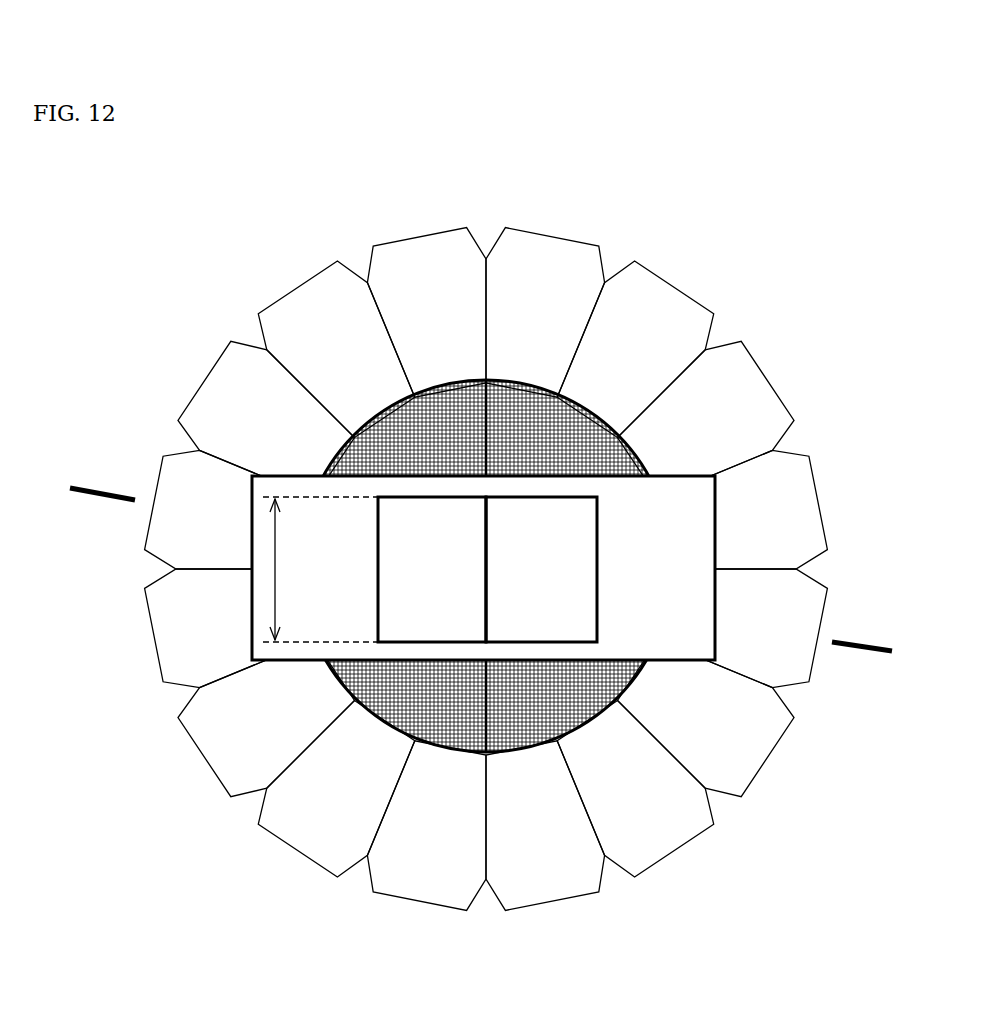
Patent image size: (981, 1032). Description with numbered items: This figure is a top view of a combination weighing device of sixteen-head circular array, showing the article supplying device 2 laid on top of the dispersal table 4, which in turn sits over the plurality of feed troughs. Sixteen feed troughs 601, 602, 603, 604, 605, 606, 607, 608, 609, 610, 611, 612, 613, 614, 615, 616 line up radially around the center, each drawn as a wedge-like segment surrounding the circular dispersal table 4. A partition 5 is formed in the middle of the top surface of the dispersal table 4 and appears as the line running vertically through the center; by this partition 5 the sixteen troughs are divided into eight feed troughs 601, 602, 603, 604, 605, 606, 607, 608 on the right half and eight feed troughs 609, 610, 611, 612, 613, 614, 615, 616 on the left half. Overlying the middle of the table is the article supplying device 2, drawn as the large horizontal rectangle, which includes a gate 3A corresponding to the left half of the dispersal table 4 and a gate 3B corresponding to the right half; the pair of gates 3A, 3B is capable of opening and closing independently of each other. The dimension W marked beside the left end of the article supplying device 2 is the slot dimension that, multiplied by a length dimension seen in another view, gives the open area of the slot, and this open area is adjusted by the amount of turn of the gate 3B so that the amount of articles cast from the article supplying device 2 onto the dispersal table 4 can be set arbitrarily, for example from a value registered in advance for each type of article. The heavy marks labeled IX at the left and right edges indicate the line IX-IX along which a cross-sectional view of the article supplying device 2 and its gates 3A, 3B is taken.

The article supplying device 2 is at (670, 520).
The gate 3A is at (410, 547).
The gate 3B is at (585, 562).
The dispersal table 4 is at (590, 445).
The partition 5 is at (493, 420).
The dimension W is at (277, 607).
The line IX- IX is at (65, 542).
The feed trough 601 is at (515, 323).
The feed trough 602 is at (605, 354).
The feed trough 603 is at (681, 424).
The feed trough 604 is at (733, 539).
The feed trough 605 is at (732, 634).
The feed trough 606 is at (691, 729).
The feed trough 607 is at (606, 810).
The feed trough 608 is at (514, 863).
The feed trough 609 is at (410, 865).
The feed trough 610 is at (305, 803).
The feed trough 611 is at (219, 739).
The feed trough 612 is at (166, 633).
The feed trough 613 is at (168, 530).
The feed trough 614 is at (220, 425).
The feed trough 615 is at (305, 353).
The feed trough 616 is at (410, 310).